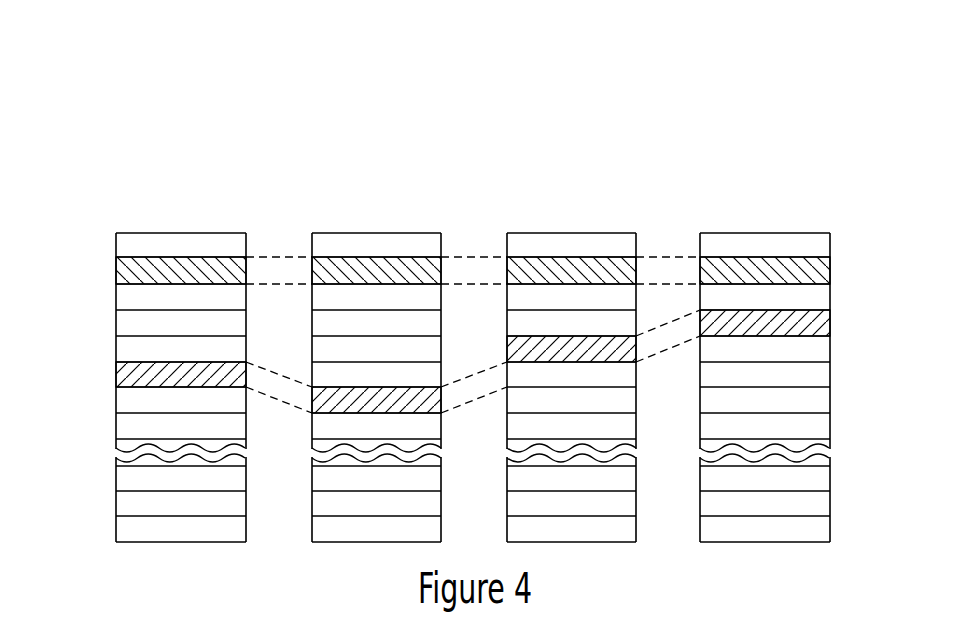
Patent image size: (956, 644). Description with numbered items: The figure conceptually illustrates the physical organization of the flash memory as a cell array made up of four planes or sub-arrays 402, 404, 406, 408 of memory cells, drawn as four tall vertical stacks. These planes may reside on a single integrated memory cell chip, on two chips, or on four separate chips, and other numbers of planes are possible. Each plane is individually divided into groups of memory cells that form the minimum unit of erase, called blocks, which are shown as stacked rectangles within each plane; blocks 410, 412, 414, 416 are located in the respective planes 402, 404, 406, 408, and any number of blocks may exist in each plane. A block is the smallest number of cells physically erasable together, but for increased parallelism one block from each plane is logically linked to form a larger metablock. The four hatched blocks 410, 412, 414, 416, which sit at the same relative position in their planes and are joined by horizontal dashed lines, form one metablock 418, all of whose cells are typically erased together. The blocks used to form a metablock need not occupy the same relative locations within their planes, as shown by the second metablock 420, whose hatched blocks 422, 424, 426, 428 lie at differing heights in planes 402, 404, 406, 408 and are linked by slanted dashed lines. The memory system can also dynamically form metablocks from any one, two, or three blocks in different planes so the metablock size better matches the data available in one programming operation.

The plane 402 is at (184, 214).
The plane 404 is at (383, 214).
The plane 406 is at (565, 214).
The plane 408 is at (781, 213).
The block 410 is at (162, 272).
The block 412 is at (352, 272).
The block 414 is at (551, 272).
The block 416 is at (793, 270).
The metablock 418 is at (677, 256).
The second metablock 420 is at (666, 318).
The block 422 is at (158, 374).
The block 424 is at (352, 400).
The block 426 is at (557, 346).
The block 428 is at (793, 320).